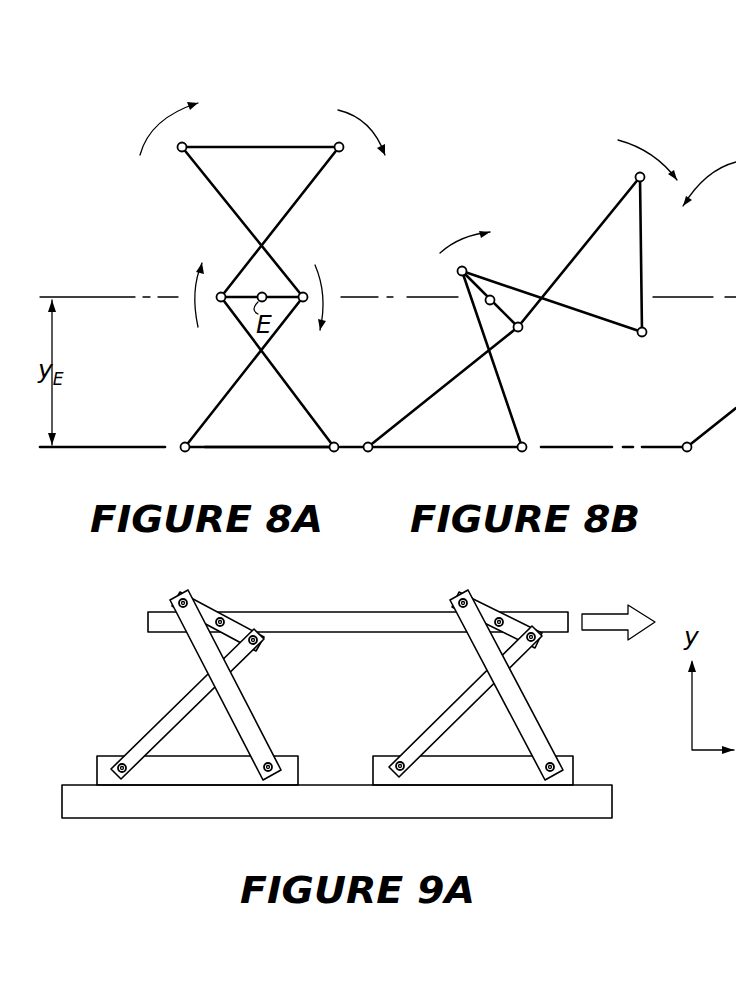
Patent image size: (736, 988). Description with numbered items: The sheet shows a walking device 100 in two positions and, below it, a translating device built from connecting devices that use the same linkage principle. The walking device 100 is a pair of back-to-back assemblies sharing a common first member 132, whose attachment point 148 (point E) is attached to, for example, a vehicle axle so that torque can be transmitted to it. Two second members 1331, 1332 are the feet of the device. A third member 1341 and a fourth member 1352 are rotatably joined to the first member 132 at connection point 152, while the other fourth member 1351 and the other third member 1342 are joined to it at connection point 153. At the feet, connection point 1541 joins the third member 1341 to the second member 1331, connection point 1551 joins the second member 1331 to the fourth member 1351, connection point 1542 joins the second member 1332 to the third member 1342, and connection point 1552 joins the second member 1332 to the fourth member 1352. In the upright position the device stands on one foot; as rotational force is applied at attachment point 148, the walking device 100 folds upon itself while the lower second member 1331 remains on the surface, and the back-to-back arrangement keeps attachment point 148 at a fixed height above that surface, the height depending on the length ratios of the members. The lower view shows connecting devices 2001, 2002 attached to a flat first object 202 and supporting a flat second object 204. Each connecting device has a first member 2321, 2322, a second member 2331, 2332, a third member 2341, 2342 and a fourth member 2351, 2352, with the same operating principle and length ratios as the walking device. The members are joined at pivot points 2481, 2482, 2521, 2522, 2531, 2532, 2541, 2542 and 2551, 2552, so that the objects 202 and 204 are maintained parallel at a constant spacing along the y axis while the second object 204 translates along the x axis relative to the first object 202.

In FIG. 8A, the walking device 100 is at (372, 115).
In FIG. 8A, the first member 132 is at (278, 285).
In FIG. 8A, the second member 1331 is at (262, 446).
In FIG. 8B, the second member 1331 is at (445, 446).
In FIG. 8A, the second member 1332 is at (288, 143).
In FIG. 8A, the third member 1341 is at (278, 374).
In FIG. 8A, the third member 1342 is at (227, 205).
In FIG. 8A, the fourth member 1351 is at (222, 396).
In FIG. 8A, the fourth member 1352 is at (297, 207).
In FIG. 8A, the attachment point 148 is at (263, 293).
In FIG. 8A, the connection point 152 is at (223, 305).
In FIG. 8A, the connection point 153 is at (307, 294).
In FIG. 8A, the connection point 1541 is at (338, 452).
In FIG. 8A, the connection point 1542 is at (184, 144).
In FIG. 8A, the connection point 1551 is at (184, 452).
In FIG. 8A, the connection point 1552 is at (343, 150).
In FIG. 9A, the connecting device 2001 is at (262, 698).
In FIG. 9A, the connecting device 2002 is at (547, 712).
In FIG. 9A, the first object 202 is at (217, 800).
In FIG. 9A, the second object 204 is at (360, 620).
In FIG. 9A, the first member 2321 is at (210, 610).
In FIG. 9A, the first member 2322 is at (490, 612).
In FIG. 9A, the second member 2331 is at (110, 755).
In FIG. 9A, the second member 2332 is at (570, 762).
In FIG. 9A, the third member 2341 is at (203, 648).
In FIG. 9A, the third member 2342 is at (510, 688).
In FIG. 9A, the fourth member 2351 is at (172, 715).
In FIG. 9A, the fourth member 2352 is at (478, 680).
In FIG. 9A, the pivot 248 sub 1 2481 is at (228, 618).
In FIG. 9A, the pivot 248 sub 2 2482 is at (520, 615).
In FIG. 9A, the pivot 252 sub 1 2521 is at (178, 600).
In FIG. 9A, the pivot 252 sub 2 2522 is at (463, 600).
In FIG. 9A, the pivot 253 sub 1 2531 is at (258, 645).
In FIG. 9A, the pivot 253 sub 2 2532 is at (538, 632).
In FIG. 9A, the pivot 254 sub 1 2541 is at (273, 760).
In FIG. 9A, the pivot 254 sub 2 2542 is at (555, 775).
In FIG. 9A, the pivot 255 sub 1 2551 is at (122, 775).
In FIG. 9A, the pivot 255 sub 2 2552 is at (398, 760).